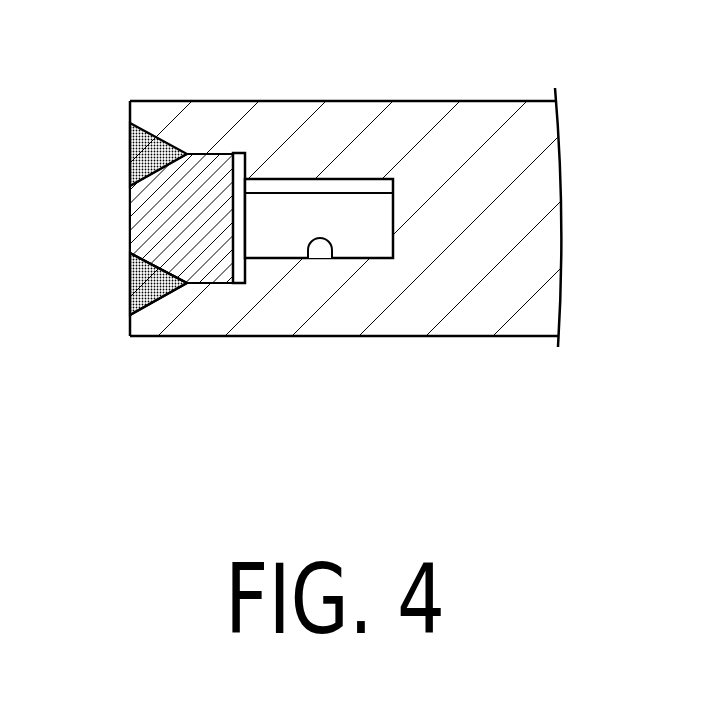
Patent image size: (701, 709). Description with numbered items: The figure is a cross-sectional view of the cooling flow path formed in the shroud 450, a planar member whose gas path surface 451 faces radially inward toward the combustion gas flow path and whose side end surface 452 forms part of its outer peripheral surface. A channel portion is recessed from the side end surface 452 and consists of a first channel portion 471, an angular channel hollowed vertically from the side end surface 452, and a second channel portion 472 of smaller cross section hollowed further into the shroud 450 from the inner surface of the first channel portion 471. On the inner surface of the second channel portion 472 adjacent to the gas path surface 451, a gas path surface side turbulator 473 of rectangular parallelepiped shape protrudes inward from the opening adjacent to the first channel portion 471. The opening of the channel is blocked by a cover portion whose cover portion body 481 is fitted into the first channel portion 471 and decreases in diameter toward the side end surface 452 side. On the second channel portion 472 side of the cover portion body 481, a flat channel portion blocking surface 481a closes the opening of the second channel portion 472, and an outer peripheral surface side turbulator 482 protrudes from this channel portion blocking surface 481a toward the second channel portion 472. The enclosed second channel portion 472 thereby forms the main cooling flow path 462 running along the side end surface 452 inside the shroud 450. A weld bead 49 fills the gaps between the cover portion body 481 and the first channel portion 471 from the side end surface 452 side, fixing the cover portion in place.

The shroud 450 is at (545, 177).
The gas path surface 451 is at (473, 100).
The side end surface 452 is at (130, 119).
The cover portion body 481 is at (157, 215).
The channel portion blocking surface 481a is at (235, 270).
The outer peripheral surface side turbulator 482 is at (238, 163).
The weld bead 49 is at (136, 151).
The first channel portion 471 is at (147, 288).
The second channel portion 472 is at (333, 258).
The gas path surface side turbulator 473 is at (293, 183).
The main cooling flow path 462 is at (355, 226).